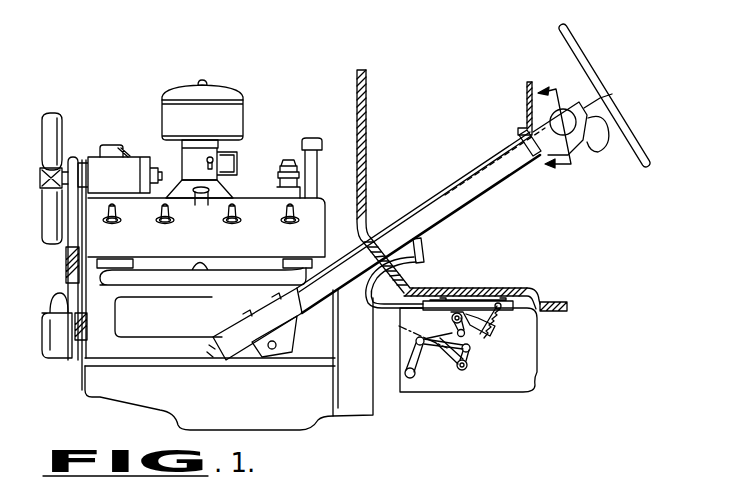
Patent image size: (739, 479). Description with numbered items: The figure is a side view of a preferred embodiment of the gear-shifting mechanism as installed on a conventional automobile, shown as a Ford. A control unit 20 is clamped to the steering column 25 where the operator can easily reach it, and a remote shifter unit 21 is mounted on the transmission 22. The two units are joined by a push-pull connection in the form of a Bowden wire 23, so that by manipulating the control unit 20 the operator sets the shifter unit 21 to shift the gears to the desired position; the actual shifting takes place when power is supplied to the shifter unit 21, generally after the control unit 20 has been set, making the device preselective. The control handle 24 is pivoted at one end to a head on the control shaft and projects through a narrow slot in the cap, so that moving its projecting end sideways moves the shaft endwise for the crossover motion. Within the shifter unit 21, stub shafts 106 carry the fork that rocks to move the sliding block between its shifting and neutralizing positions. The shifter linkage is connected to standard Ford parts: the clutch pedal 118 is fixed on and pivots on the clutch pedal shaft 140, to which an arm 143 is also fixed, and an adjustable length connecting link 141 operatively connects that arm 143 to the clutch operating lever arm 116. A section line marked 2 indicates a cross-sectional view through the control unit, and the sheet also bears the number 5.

The section line 2- 2 is at (556, 123).
The sheet figure number 5 is at (570, 474).
The control unit 20 is at (581, 152).
The remote shifter unit 21 is at (562, 97).
The transmission 22 is at (536, 341).
The Bowden wire 23 is at (410, 208).
The control handle 24 is at (610, 97).
The steering column 25 is at (455, 212).
The stub shafts 106 is at (522, 304).
The clutch operating lever arm 116 is at (418, 377).
The clutch pedal 118 is at (421, 256).
The clutch pedal shaft 140 is at (467, 366).
The connecting link 141 is at (429, 350).
The arm 143 is at (470, 348).